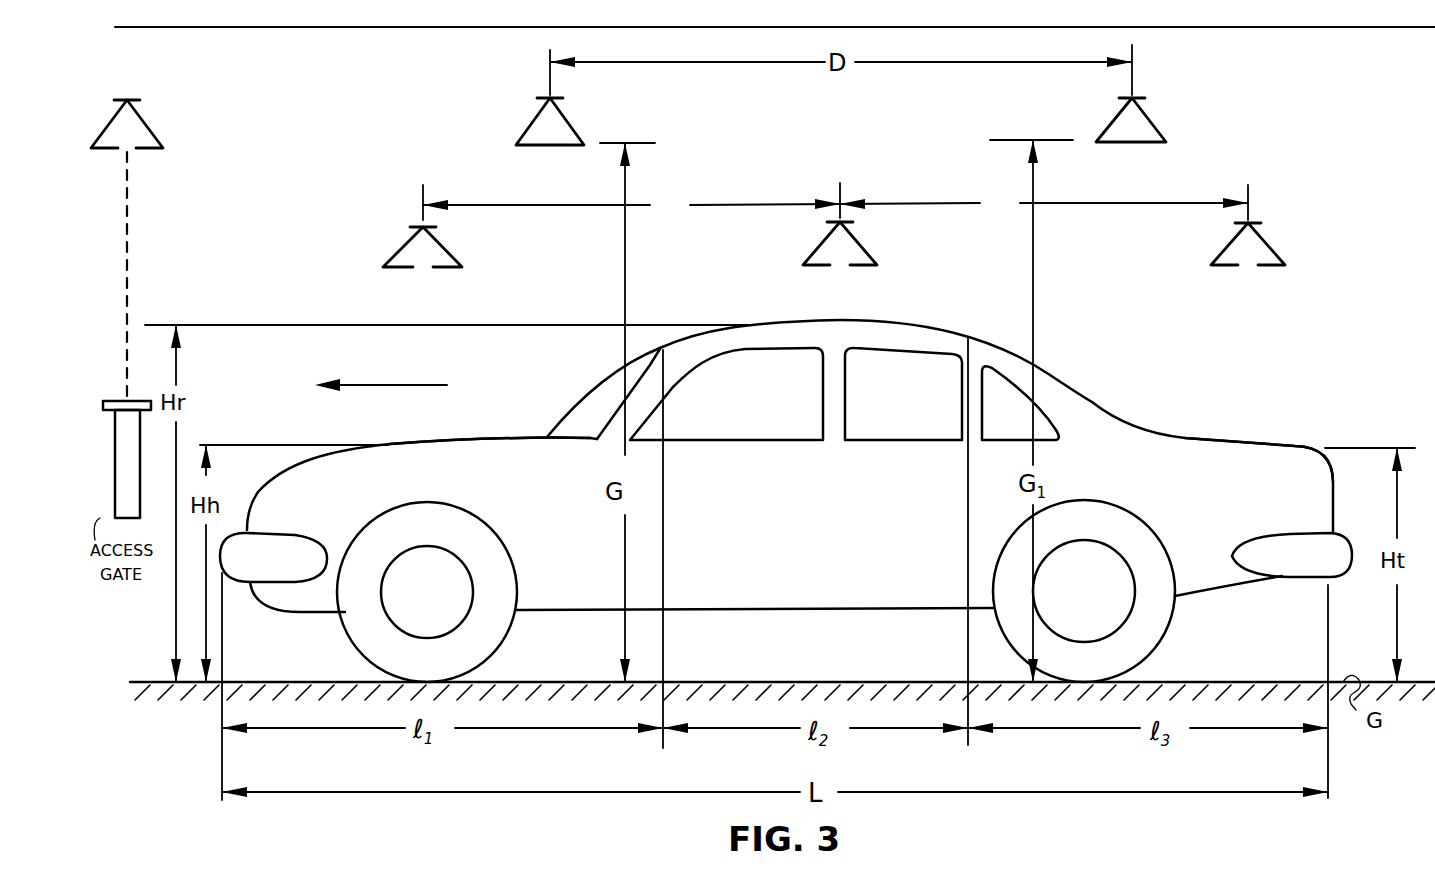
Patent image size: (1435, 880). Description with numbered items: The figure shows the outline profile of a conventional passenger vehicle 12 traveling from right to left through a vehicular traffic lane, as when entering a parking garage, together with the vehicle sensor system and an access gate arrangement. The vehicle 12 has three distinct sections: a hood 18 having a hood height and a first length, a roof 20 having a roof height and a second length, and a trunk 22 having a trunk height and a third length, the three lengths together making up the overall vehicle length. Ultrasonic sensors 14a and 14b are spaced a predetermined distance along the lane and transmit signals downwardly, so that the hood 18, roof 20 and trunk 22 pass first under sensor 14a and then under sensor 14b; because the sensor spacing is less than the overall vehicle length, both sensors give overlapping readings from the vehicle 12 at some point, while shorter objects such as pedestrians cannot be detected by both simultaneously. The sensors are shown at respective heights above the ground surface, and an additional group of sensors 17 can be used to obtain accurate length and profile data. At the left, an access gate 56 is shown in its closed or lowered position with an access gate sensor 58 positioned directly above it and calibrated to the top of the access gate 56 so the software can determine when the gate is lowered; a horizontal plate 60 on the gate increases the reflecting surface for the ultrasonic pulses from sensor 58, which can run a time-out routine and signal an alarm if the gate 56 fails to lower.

The vehicle 12 is at (786, 480).
The ultrasonic sensor 14a is at (1152, 120).
The ultrasonic sensor 14b is at (527, 122).
The sensor array S3-S5 17 is at (415, 166).
The hood 18 is at (468, 440).
The roof 20 is at (916, 322).
The trunk 22 is at (1265, 446).
The access gate 56 is at (127, 447).
The access gate sensor 58 is at (148, 126).
The horizontal plate 60 is at (105, 401).